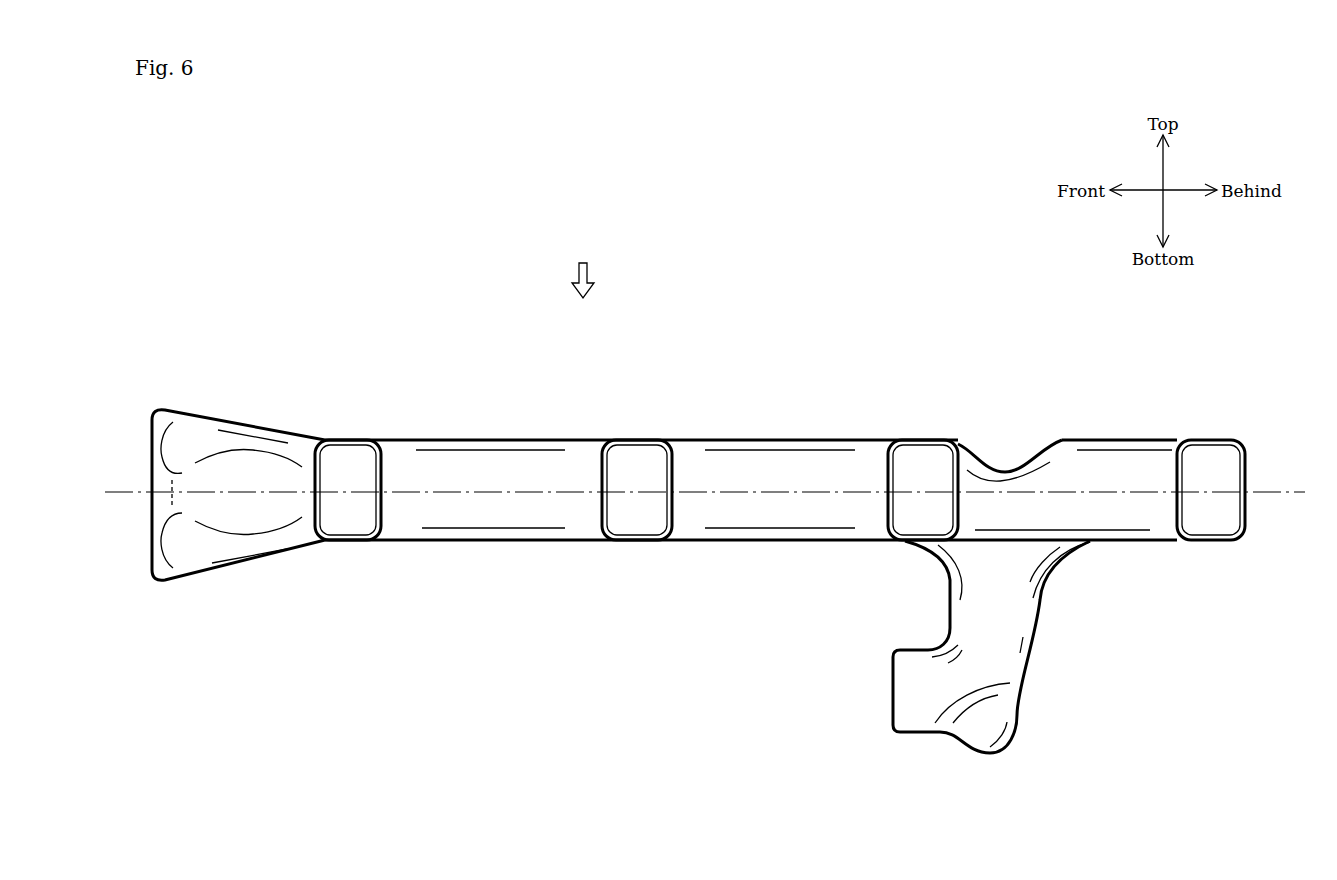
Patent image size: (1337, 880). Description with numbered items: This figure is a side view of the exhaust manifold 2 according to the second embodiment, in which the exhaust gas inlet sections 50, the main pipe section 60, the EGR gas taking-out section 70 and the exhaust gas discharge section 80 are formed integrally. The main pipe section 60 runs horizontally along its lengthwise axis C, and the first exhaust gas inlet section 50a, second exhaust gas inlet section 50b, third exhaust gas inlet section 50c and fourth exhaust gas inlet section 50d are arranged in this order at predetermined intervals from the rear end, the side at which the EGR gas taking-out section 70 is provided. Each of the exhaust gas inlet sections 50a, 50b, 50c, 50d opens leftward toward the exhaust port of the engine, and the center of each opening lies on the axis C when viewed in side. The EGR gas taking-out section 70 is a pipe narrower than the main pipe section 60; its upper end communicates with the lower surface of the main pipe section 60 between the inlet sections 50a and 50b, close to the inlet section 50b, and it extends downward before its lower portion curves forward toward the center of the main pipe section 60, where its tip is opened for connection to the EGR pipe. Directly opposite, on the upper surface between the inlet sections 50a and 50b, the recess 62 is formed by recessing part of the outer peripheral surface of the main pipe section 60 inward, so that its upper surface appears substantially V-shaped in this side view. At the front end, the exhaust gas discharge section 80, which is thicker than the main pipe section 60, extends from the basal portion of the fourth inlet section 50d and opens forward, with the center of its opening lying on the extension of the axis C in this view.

The exhaust manifold 2 is at (583, 269).
The axis C is at (1271, 492).
The exhaust gas inlet sections 50 is at (1252, 550).
The first exhaust gas inlet section 50a is at (1170, 522).
The second exhaust gas inlet section 50b is at (883, 520).
The third exhaust gas inlet section 50c is at (677, 520).
The fourth exhaust gas inlet section 50d is at (388, 522).
The main pipe section 60 is at (496, 420).
The recess 62 is at (1000, 468).
The EGR gas taking-out section 70 is at (1015, 712).
The exhaust gas discharge section 80 is at (203, 430).